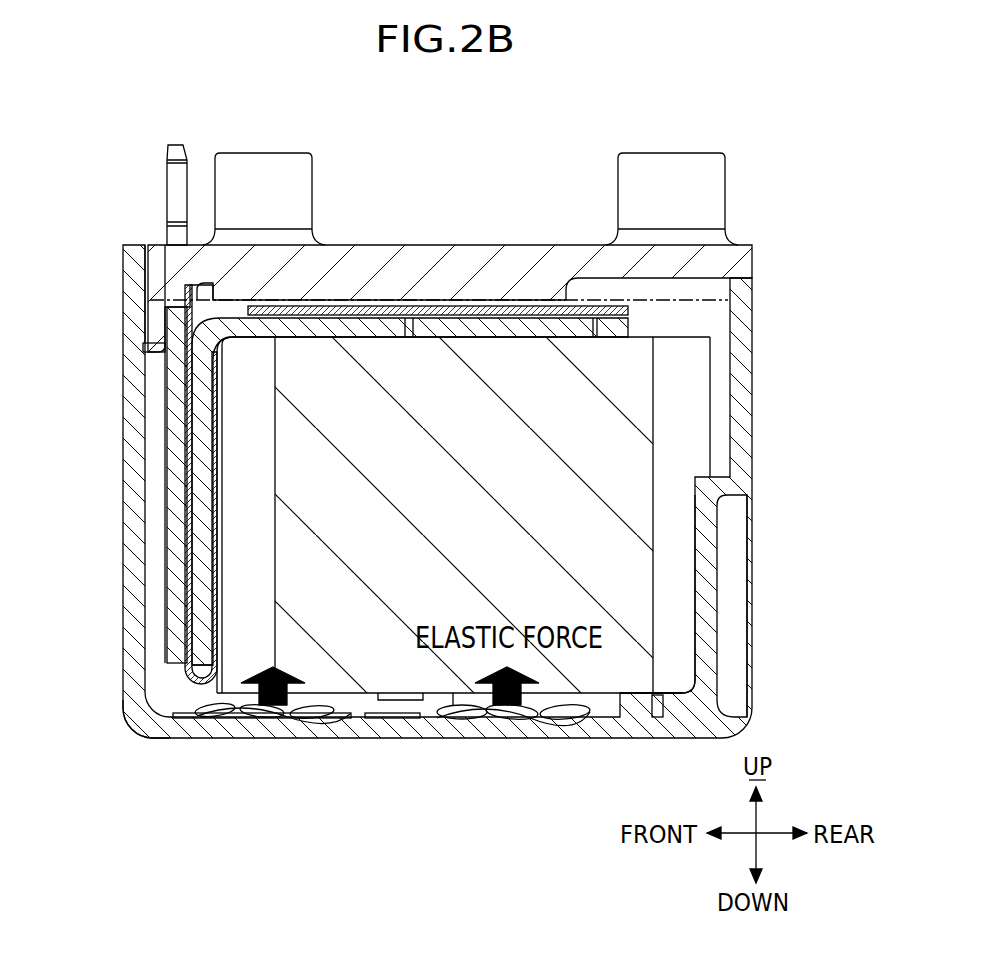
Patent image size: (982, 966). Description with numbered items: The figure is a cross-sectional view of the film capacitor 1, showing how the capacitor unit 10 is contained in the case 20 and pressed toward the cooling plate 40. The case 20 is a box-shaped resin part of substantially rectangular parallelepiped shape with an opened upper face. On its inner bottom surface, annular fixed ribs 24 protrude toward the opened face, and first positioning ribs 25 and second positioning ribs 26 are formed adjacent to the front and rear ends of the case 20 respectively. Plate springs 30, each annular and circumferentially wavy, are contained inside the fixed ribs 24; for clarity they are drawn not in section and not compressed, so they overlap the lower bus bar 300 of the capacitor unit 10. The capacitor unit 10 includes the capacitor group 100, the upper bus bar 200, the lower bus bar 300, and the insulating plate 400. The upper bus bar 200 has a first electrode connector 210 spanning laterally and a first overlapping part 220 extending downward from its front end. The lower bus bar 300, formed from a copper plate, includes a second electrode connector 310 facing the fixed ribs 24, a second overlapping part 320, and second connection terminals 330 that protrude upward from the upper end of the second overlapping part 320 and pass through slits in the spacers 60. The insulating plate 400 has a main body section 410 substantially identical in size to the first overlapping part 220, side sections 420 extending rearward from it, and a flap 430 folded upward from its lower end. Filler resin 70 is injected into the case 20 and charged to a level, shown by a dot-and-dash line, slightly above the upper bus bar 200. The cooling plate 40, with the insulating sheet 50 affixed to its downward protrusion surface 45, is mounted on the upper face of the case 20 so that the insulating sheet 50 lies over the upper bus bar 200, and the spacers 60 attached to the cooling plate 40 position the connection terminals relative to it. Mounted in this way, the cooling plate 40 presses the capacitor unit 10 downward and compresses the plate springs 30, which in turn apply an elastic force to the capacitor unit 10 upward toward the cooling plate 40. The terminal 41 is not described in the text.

The film capacitor 1 is at (135, 135).
The capacitor unit 10 is at (713, 363).
The case 20 is at (750, 537).
The fixed rib 24 is at (190, 718).
The first positioning rib 25 is at (160, 693).
The second positioning rib 26 is at (660, 718).
The plate spring 30 is at (322, 720).
The cooling plate 40 is at (502, 258).
The electrode terminal 41 is at (314, 170).
The protrusion surface 45 is at (397, 338).
The insulating sheet 50 is at (457, 330).
The spacer 60 is at (158, 256).
The filler resin 70 is at (710, 298).
The capacitor group 100 is at (688, 448).
The upper bus bar 200 is at (339, 423).
The first electrode connector 210 is at (513, 323).
The first overlapping part 220 is at (202, 417).
The lower bus bar 300 is at (420, 469).
The second electrode connector 310 is at (630, 690).
The second overlapping part 320 is at (175, 590).
The second connection terminal 330 is at (185, 150).
The insulating plate 400 is at (211, 448).
The main body section 410 is at (277, 492).
The side section 420 is at (260, 295).
The flap 430 is at (223, 612).